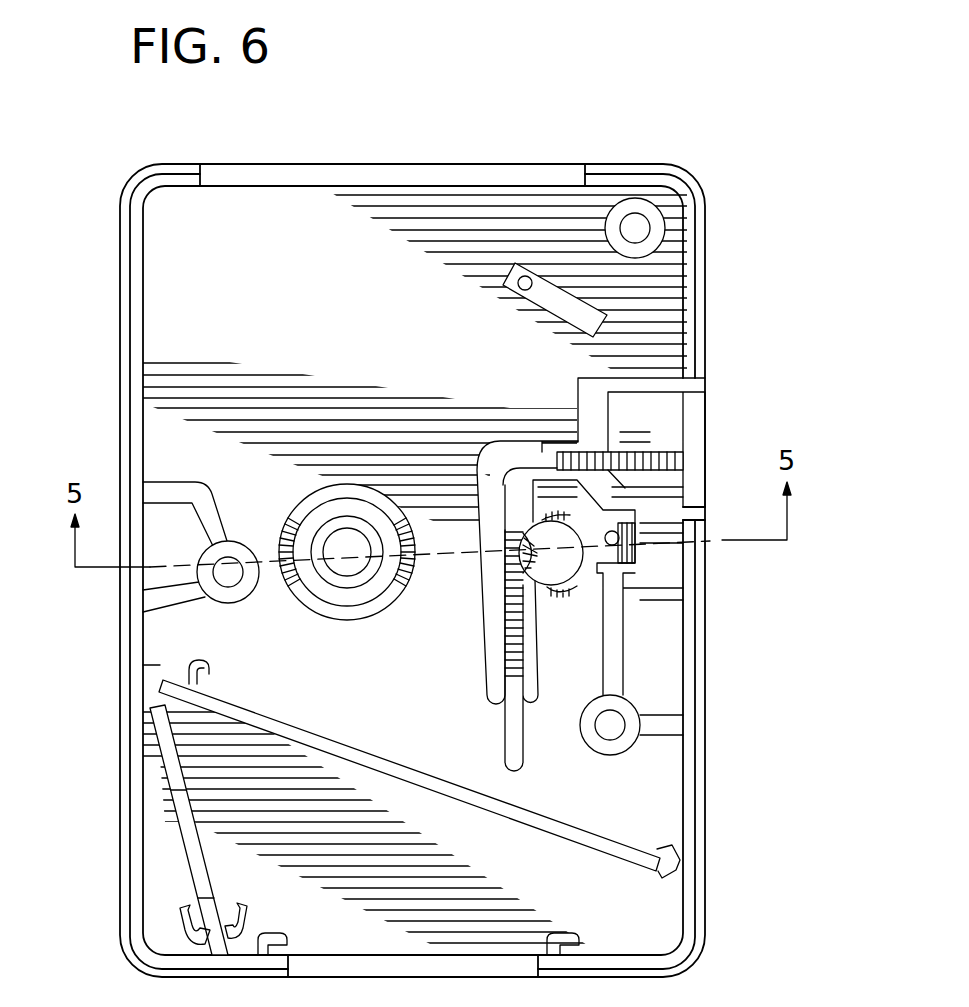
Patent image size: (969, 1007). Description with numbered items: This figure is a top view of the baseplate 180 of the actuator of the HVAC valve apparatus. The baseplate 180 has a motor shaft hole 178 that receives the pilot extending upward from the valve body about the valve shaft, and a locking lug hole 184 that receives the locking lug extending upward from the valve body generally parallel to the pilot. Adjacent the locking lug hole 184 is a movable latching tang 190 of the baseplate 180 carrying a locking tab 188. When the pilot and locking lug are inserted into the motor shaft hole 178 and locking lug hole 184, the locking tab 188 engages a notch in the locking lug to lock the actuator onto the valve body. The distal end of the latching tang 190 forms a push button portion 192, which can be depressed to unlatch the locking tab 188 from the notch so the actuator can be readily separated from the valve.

The motor shaft hole 178 is at (347, 592).
The baseplate 180 is at (120, 852).
The locking lug hole 184 is at (566, 573).
The locking tab 188 is at (537, 563).
The latching tang 190 is at (542, 450).
The push button portion 192 is at (693, 447).